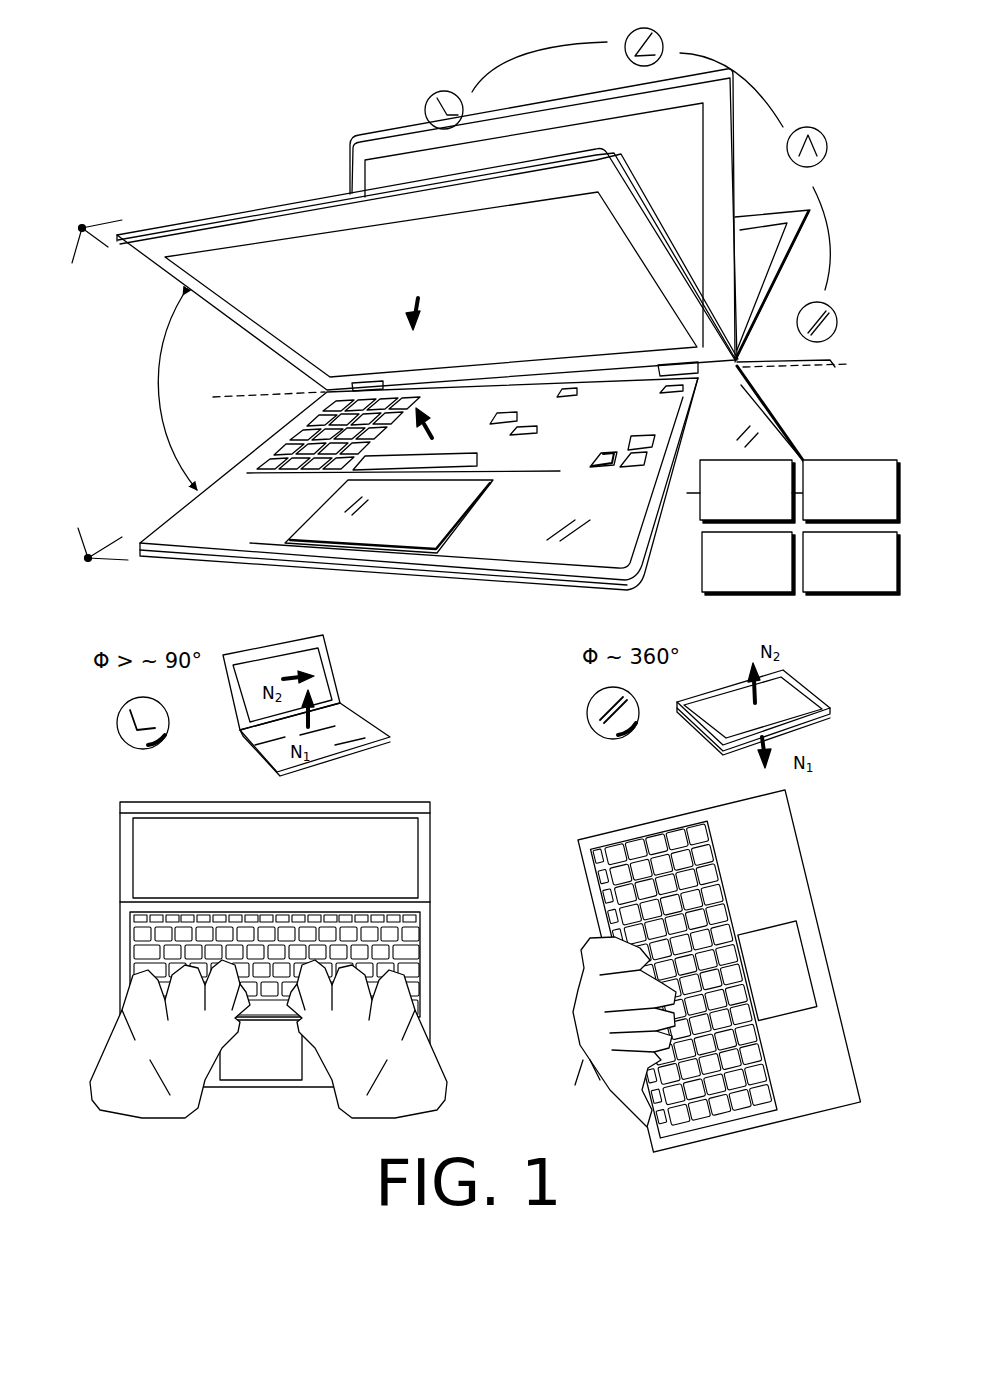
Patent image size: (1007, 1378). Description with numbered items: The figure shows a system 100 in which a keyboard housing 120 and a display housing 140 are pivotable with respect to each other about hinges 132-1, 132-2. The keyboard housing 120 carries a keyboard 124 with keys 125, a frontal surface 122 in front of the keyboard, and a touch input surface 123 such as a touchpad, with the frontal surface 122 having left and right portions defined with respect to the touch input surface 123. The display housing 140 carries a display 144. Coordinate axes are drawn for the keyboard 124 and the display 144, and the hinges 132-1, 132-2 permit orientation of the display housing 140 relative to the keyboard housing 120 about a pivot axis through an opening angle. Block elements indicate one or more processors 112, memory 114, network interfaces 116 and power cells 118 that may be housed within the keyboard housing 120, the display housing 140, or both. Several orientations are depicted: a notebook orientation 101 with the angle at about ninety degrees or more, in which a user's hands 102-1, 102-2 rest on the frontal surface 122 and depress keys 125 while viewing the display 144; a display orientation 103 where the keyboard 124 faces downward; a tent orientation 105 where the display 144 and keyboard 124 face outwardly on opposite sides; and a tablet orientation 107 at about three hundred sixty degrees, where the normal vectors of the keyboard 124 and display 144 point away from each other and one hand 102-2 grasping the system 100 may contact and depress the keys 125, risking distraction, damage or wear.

The system 100 is at (275, 110).
The notebook orientation 101 is at (429, 97).
The display orientation 103 is at (627, 33).
The tent orientation 105 is at (823, 130).
The tablet orientation 107 is at (837, 309).
The display housing 140 is at (200, 222).
The display 144 is at (556, 283).
The hinge 132-1 is at (378, 382).
The hinge 132-2 is at (663, 362).
The keyboard housing 120 is at (203, 565).
The keyboard 124 is at (613, 442).
The keys 125 is at (598, 467).
The touch input surface 123 is at (422, 532).
The frontal surface 122 is at (541, 527).
The processors 112 is at (765, 517).
The memory 114 is at (868, 517).
The network interfaces 116 is at (765, 589).
The power cells 118 is at (868, 589).
The hand 102-1 is at (177, 1080).
The hand 102-2 is at (420, 1090).